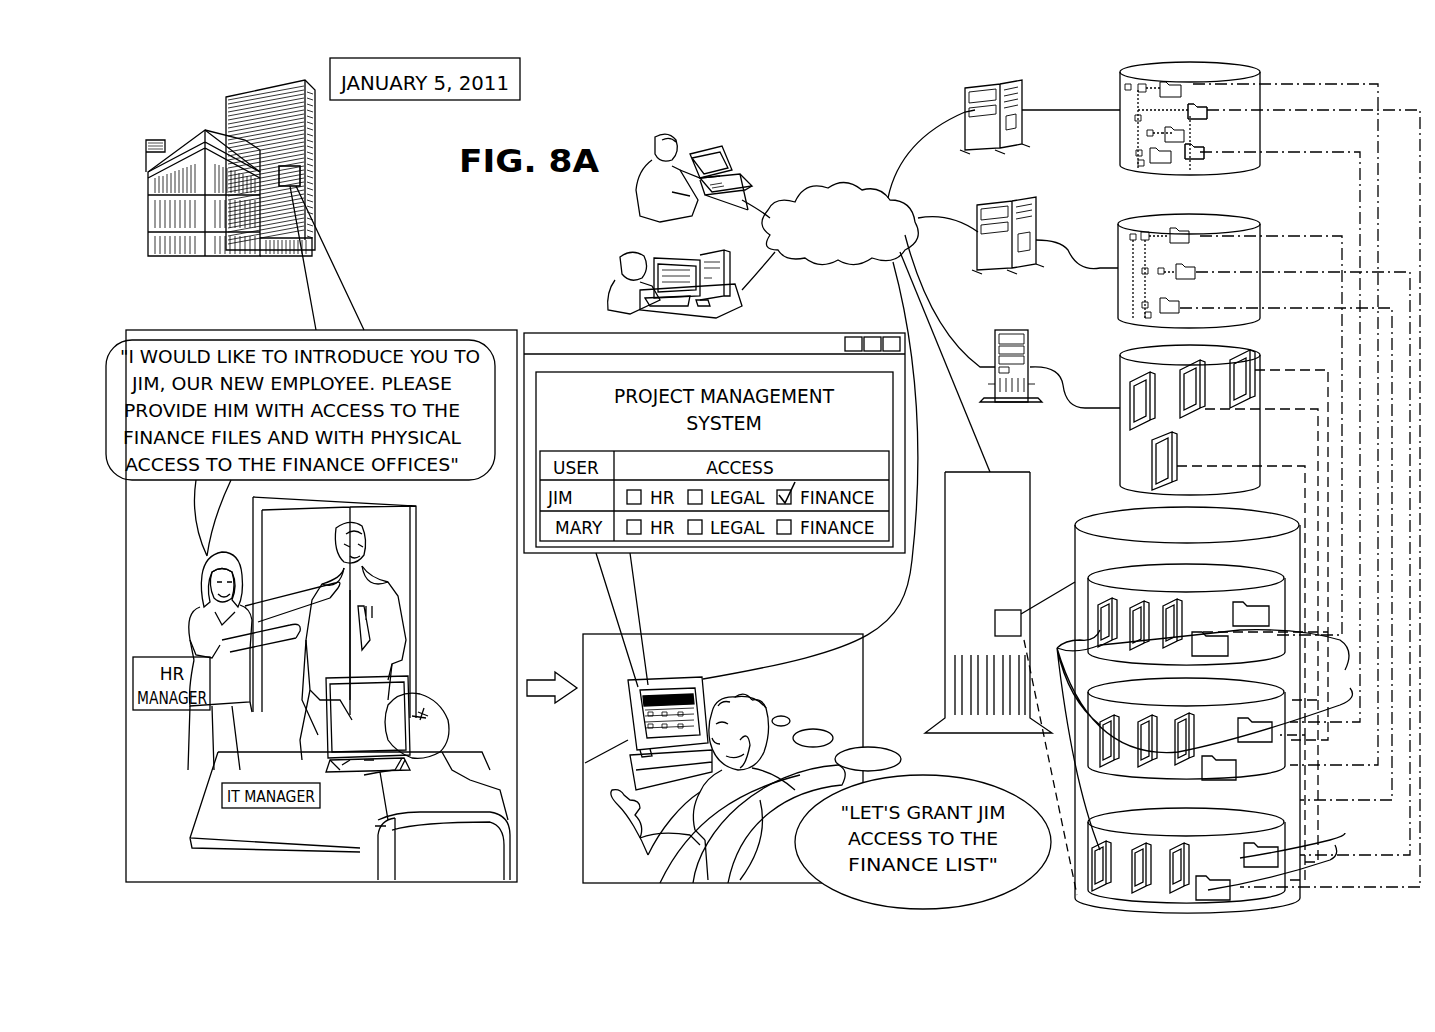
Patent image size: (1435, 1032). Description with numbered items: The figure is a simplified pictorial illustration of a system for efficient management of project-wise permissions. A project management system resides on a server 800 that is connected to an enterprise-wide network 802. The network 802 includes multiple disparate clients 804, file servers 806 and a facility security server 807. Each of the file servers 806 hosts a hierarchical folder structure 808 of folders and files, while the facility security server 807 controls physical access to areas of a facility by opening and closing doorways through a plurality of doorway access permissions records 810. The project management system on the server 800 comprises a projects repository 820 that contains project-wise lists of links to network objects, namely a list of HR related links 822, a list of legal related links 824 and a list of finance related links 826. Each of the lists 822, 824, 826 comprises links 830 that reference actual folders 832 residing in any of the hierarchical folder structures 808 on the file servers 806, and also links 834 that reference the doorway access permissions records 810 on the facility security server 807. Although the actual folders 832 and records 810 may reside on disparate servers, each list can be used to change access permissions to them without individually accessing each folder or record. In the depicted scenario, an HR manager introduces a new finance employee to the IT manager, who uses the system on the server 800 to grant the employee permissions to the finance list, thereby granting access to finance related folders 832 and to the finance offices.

The server 800 is at (1012, 472).
The enterprise-wide network 802 is at (848, 188).
The clients 804 is at (394, 690).
The file servers 806 is at (1022, 132).
The facility security server 807 is at (1028, 345).
The hierarchical folder structure 808 is at (1258, 74).
The doorway access permissions records 810 is at (1152, 452).
The projects repository 820 is at (1096, 522).
The list of HR related links 822 is at (1238, 570).
The list of legal related links 824 is at (1238, 686).
The list of finance related links 826 is at (1238, 818).
The links 830 is at (1214, 760).
The actual folders 832 is at (1192, 154).
The links 834 is at (1049, 738).